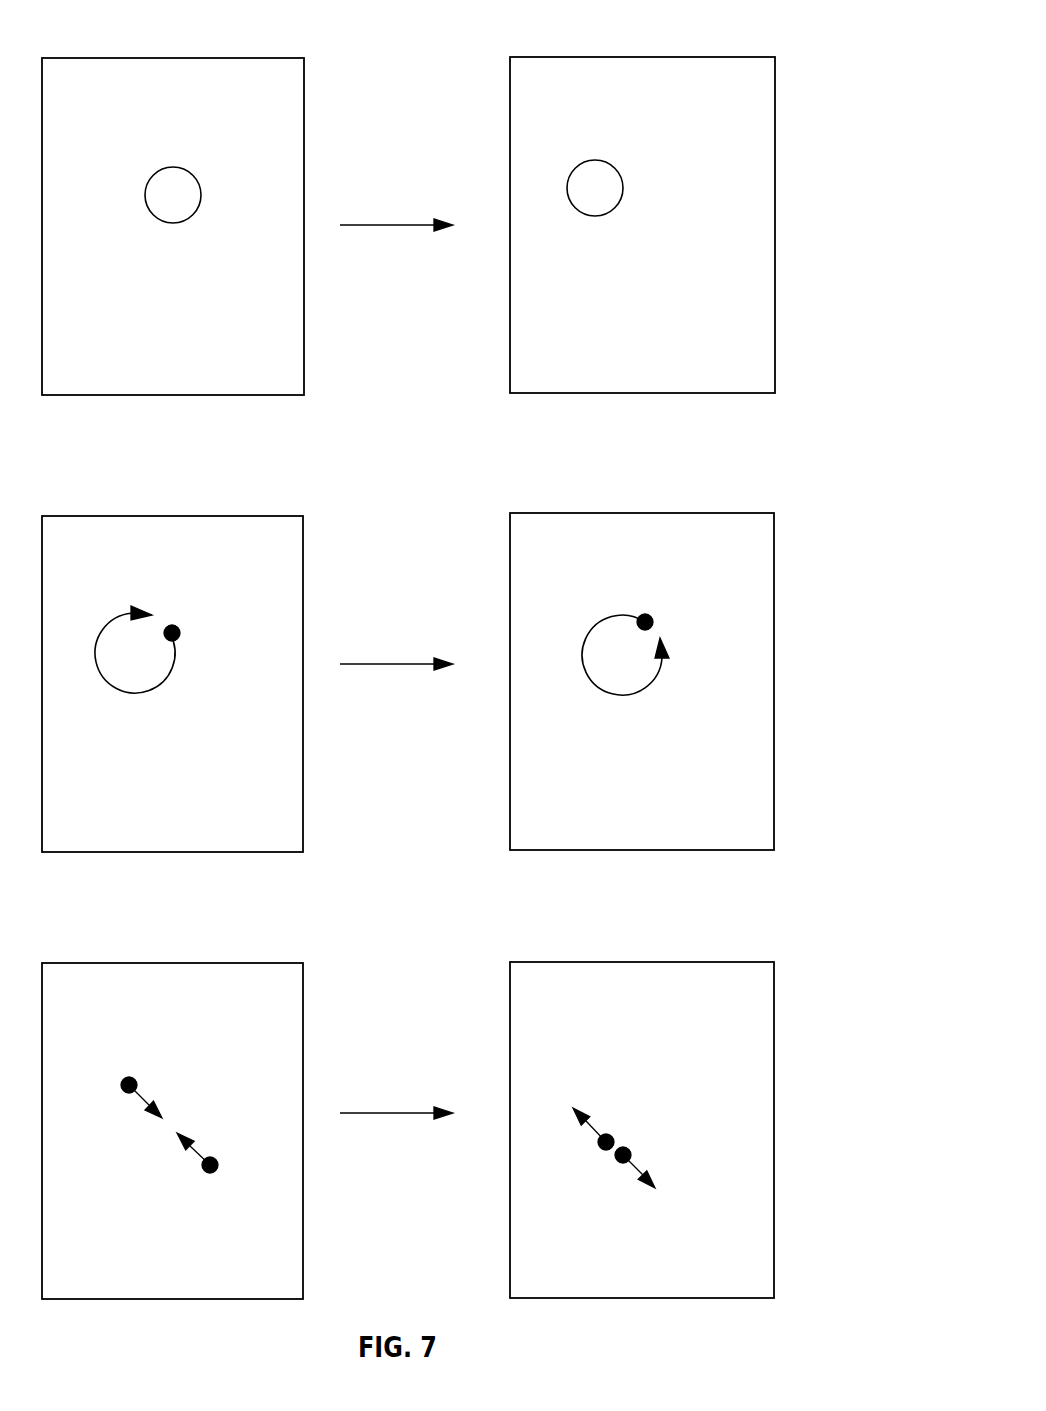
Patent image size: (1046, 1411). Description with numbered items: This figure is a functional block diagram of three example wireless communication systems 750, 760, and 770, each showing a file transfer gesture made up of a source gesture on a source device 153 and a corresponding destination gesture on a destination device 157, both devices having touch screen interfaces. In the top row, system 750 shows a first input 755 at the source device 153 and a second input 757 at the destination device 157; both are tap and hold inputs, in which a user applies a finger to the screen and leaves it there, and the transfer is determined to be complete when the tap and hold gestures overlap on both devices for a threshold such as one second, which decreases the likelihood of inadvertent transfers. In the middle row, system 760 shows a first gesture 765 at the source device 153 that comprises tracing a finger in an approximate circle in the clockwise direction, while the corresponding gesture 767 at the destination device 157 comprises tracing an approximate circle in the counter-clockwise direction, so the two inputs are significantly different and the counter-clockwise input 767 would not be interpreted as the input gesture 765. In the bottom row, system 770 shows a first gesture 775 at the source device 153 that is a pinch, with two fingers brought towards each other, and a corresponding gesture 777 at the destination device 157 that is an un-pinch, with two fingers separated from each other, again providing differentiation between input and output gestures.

The source device 153 is at (250, 56).
The destination device 157 is at (663, 55).
The wireless communication system 750 is at (815, 35).
The first input 755 is at (173, 167).
The second input 757 is at (595, 160).
The wireless communication system 760 is at (815, 511).
The first gesture 765 is at (117, 614).
The corresponding gesture 767 is at (605, 617).
The wireless communication system 770 is at (819, 940).
The first gesture 775 is at (206, 1084).
The corresponding gesture 777 is at (663, 1082).